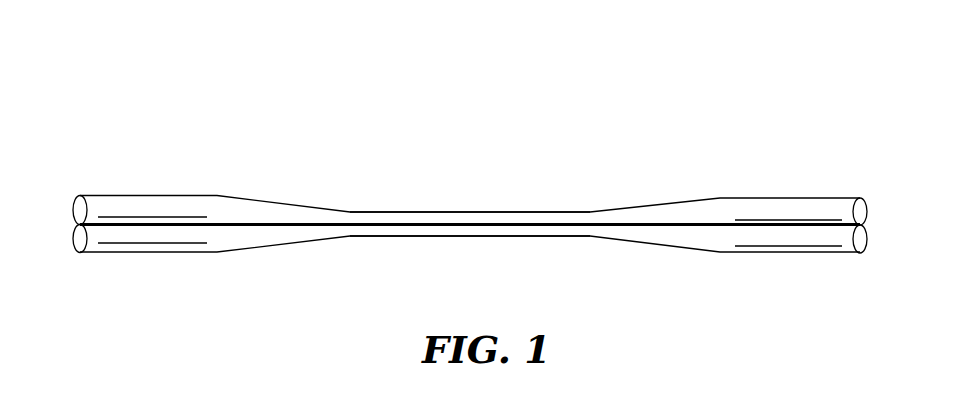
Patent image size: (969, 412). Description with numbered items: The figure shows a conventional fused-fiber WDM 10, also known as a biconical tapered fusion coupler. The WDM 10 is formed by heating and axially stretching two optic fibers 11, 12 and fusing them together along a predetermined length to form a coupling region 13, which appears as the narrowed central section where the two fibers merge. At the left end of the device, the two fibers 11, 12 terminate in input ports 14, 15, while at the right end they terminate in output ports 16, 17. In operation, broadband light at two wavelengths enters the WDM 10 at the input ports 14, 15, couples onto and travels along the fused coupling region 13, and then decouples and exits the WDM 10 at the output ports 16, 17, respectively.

The fused-fiber WDM 10 is at (482, 102).
The optic fiber 11 is at (262, 208).
The optic fiber 12 is at (262, 240).
The coupling region 13 is at (420, 212).
The input port 14 is at (73, 205).
The input port 15 is at (73, 242).
The output port 16 is at (866, 207).
The output port 17 is at (866, 242).